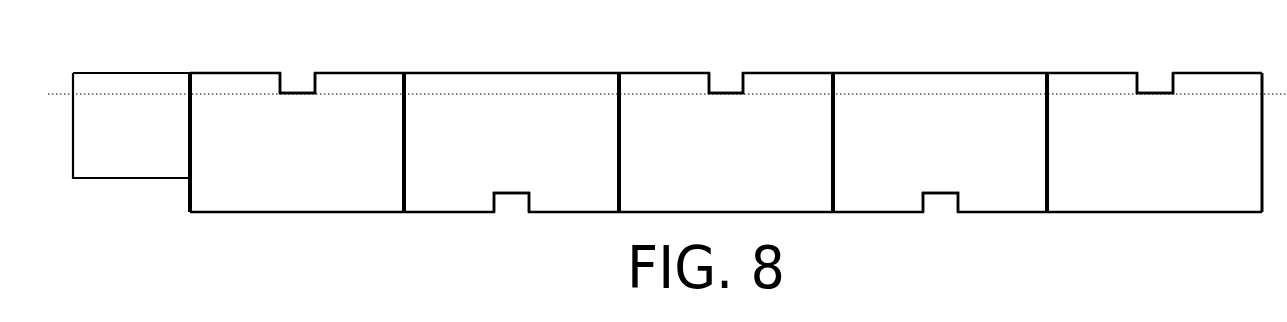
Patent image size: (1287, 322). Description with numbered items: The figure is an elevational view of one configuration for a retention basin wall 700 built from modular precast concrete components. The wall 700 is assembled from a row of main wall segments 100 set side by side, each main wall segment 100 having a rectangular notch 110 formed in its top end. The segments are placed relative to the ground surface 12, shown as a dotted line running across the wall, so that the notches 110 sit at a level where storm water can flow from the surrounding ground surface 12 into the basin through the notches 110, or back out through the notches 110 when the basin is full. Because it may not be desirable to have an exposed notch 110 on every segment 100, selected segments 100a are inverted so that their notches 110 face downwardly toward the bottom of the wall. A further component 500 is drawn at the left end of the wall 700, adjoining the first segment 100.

The retention basin wall 700 is at (447, 72).
The end block 500 is at (133, 72).
The main wall segment 100 is at (370, 73).
The inverted segment 100a is at (468, 73).
The notch 110 is at (293, 92).
The ground surface 12 is at (805, 93).